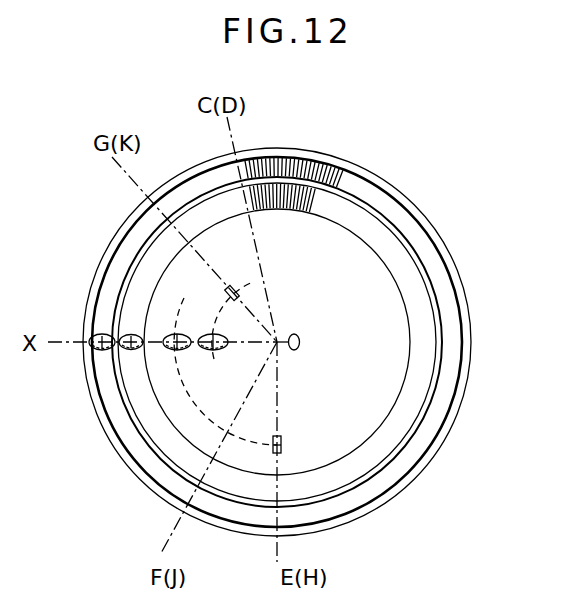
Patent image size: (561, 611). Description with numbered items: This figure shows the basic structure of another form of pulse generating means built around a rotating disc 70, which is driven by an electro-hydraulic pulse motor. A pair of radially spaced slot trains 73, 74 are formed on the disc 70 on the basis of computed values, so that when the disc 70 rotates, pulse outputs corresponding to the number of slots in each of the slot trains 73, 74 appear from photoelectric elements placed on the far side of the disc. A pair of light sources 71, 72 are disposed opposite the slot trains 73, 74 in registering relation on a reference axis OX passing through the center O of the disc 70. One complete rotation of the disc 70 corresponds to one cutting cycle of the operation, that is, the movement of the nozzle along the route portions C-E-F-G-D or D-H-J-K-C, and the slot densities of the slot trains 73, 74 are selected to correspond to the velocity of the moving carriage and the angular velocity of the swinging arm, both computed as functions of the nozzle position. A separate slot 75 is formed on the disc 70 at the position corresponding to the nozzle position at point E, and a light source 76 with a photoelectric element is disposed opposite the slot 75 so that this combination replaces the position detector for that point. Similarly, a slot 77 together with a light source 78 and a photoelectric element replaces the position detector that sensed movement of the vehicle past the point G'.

The disc 70 is at (465, 292).
The light source 71 is at (98, 334).
The light source 72 is at (141, 350).
The slot train 73 is at (342, 166).
The slot train 74 is at (291, 209).
The slot 75 is at (282, 445).
The light source 76 is at (182, 335).
The slot 77 is at (232, 288).
The light source 78 is at (218, 350).